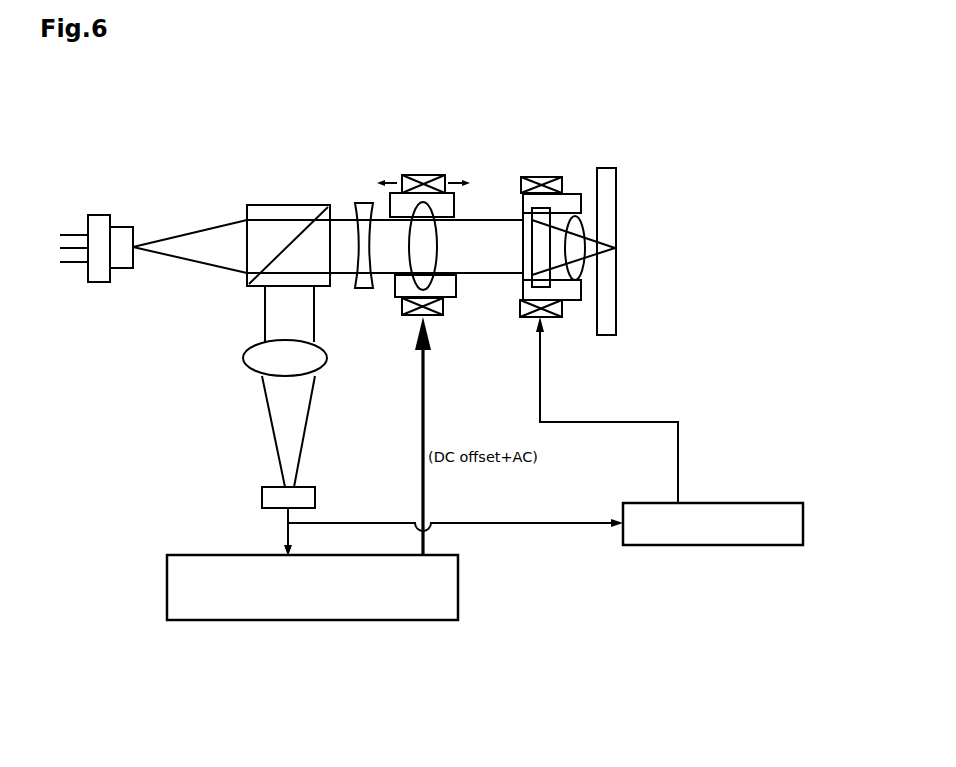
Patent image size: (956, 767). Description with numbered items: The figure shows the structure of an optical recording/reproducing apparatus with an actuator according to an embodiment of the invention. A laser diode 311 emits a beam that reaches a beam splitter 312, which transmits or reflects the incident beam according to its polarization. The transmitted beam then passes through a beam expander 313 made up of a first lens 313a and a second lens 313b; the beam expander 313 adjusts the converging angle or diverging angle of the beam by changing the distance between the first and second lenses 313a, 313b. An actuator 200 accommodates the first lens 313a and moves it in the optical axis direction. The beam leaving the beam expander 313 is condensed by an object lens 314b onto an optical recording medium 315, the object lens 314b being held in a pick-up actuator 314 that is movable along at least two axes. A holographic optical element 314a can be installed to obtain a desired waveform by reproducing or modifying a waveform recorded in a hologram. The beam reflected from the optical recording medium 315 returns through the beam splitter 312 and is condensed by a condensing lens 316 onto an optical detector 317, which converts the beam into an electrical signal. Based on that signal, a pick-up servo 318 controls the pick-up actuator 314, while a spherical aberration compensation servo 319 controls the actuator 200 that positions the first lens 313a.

The laser diode 311 is at (100, 218).
The beam splitter 312 is at (293, 205).
The beam expander 313 is at (417, 112).
The first lens 313a is at (362, 202).
The second lens 313b is at (422, 198).
The actuator 200 is at (432, 178).
The pick-up actuator 314 is at (545, 177).
The holographic optical element 314a is at (533, 247).
The object lens 314b is at (578, 272).
The optical recording medium 315 is at (610, 206).
The condensing lens 316 is at (253, 362).
The optical detector 317 is at (303, 497).
The pick-up servo 318 is at (678, 546).
The spherical aberration compensation servo 319 is at (313, 621).